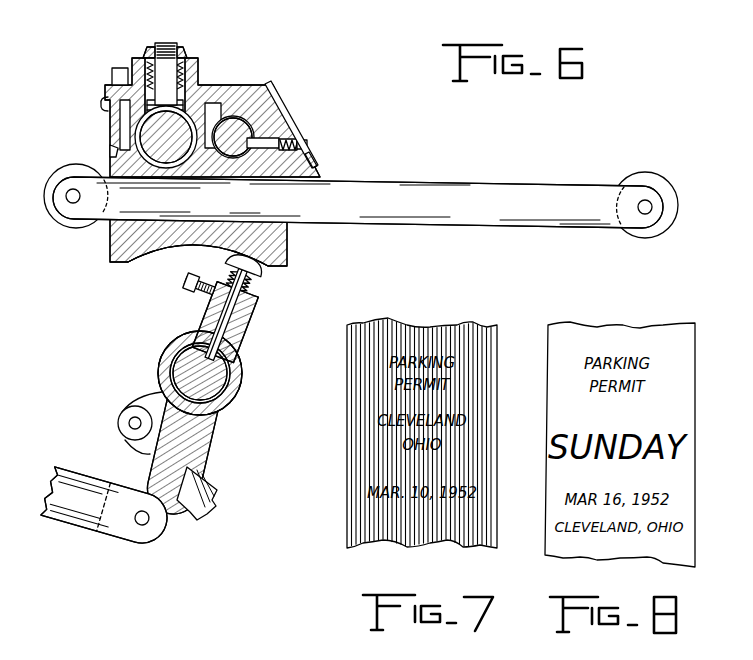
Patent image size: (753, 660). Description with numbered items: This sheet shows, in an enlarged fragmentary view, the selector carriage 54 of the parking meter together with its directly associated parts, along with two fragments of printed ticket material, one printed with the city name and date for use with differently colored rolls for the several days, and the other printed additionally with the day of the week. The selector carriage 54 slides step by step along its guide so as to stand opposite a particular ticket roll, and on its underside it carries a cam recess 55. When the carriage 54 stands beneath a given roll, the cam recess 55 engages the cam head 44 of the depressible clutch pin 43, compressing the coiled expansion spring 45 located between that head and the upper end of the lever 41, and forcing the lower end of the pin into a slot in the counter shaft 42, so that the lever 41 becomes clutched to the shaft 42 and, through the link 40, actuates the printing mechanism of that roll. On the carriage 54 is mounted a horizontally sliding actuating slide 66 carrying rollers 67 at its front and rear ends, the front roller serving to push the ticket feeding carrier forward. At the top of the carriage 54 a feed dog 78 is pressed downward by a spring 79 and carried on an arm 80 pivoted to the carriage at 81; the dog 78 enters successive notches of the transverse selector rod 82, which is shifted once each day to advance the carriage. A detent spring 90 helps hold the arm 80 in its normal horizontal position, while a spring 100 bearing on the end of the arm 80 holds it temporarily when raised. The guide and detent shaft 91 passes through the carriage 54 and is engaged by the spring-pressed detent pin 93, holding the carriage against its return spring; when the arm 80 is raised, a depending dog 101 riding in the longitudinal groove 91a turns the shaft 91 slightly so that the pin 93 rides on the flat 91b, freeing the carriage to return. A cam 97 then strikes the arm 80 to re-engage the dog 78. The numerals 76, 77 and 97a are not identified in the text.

The link 40 is at (95, 527).
The lever 41 is at (206, 431).
The counter shaft 42 is at (240, 378).
The clutch pin 43 is at (250, 328).
The cam head 44 is at (265, 268).
The coiled expansion spring 45 is at (256, 290).
The selector carriage 54 is at (113, 264).
The cam recess 55 is at (184, 252).
The actuating slide 66 is at (372, 184).
The rollers 67 is at (58, 165).
The bracket 76 is at (200, 470).
The lug 77 is at (148, 393).
The feed dog 78 is at (190, 83).
The spring 79 is at (185, 50).
The arm 80 is at (256, 90).
The pivot 81 is at (245, 80).
The selector rod 82 is at (170, 160).
The detent spring 90 is at (108, 122).
The guide and detent shaft 91 is at (235, 158).
The longitudinal groove 91a is at (213, 150).
The flat 91b is at (300, 124).
The detent pin 93 is at (290, 144).
The cam 97 is at (115, 70).
The nut 97a is at (165, 43).
The spring 100 is at (258, 140).
The dog 101 is at (109, 150).